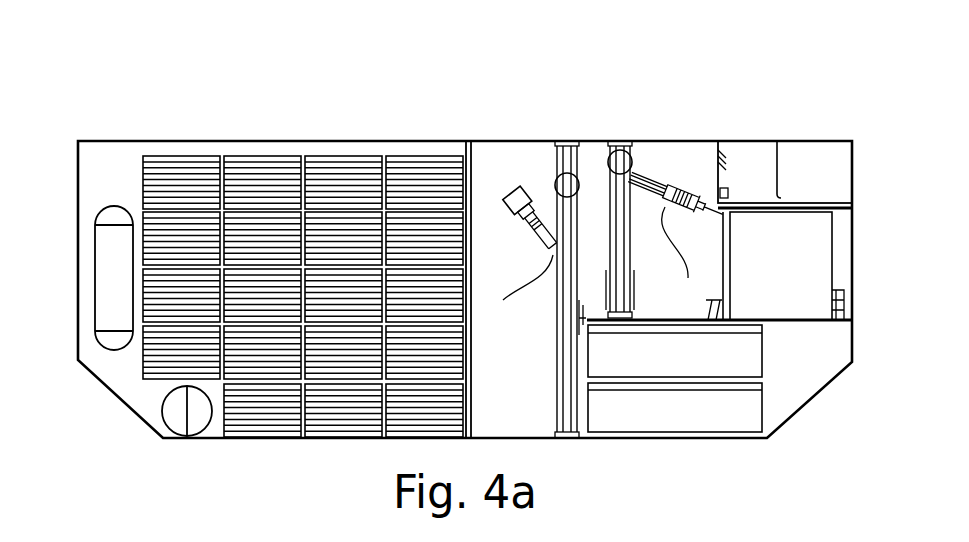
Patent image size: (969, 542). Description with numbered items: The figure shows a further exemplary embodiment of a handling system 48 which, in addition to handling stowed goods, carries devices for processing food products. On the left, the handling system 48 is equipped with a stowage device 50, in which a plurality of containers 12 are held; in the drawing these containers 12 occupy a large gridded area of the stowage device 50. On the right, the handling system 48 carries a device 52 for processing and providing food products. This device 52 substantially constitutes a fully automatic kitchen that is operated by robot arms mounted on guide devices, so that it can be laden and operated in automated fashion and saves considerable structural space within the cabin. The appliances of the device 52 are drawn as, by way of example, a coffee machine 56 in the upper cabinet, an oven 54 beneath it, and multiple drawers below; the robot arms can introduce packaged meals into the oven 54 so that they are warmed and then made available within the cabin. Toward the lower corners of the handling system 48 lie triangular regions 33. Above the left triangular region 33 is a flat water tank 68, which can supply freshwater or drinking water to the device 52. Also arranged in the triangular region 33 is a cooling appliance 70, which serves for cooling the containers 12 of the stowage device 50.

The container 12 is at (178, 170).
The stowage device 50 is at (303, 245).
The handling system 48 is at (517, 100).
The device for processing and providing food products 52 is at (688, 130).
The coffee machine 56 is at (753, 155).
The oven 54 is at (775, 266).
The water tank 68 is at (102, 268).
The cooling appliance 70 is at (178, 418).
The triangular region 33 is at (97, 398).